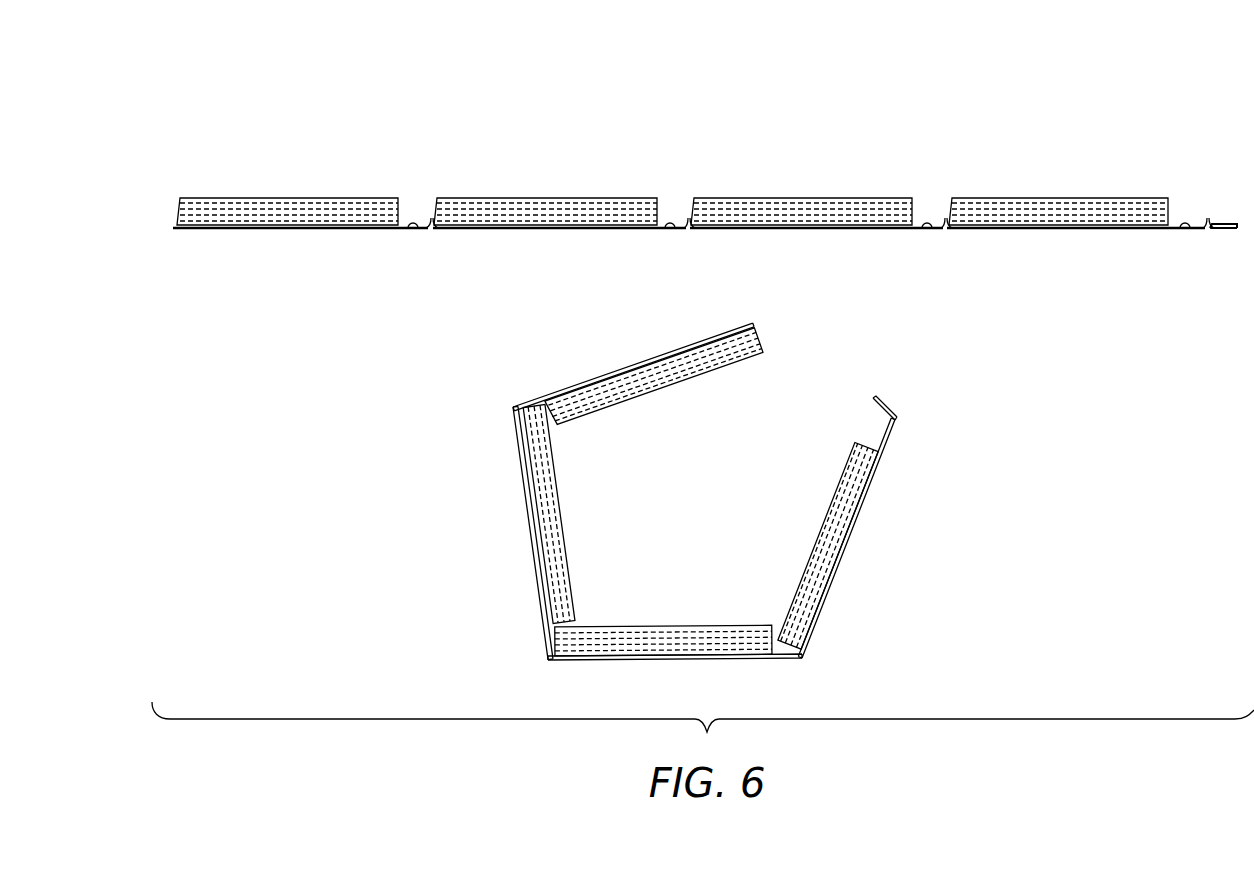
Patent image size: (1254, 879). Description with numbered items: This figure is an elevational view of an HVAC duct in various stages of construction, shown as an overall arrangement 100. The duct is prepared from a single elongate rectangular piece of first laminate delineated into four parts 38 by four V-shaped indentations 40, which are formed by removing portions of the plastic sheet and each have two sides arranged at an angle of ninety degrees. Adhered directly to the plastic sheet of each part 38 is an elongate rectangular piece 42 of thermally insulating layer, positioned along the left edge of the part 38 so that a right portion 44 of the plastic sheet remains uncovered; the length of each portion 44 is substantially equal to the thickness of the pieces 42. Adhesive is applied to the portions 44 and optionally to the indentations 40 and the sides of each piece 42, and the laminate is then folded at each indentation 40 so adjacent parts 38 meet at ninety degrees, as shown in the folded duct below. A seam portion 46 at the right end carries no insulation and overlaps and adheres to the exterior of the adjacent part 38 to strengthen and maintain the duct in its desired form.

The panel assembly blank 100 is at (296, 77).
The part 38 is at (256, 251).
The V-shaped indentation 40 is at (833, 164).
The rectangular piece of thermally insulating layer 42 is at (268, 197).
The right portion of plastic sheet 44 is at (775, 269).
The seam portion 46 is at (1058, 322).